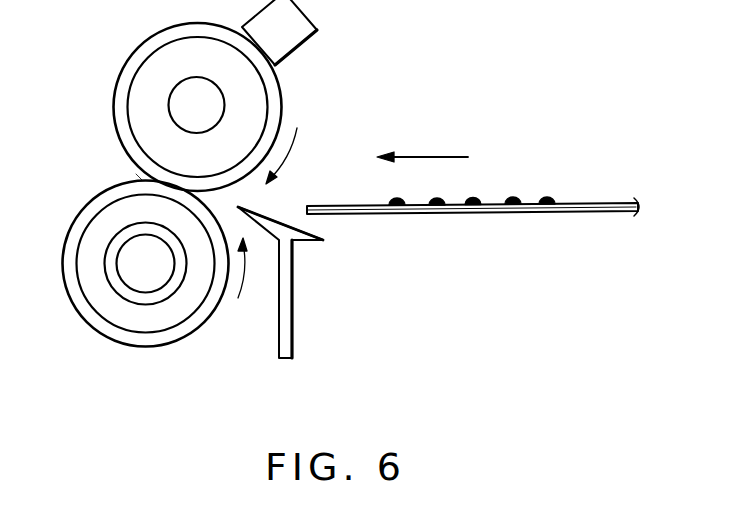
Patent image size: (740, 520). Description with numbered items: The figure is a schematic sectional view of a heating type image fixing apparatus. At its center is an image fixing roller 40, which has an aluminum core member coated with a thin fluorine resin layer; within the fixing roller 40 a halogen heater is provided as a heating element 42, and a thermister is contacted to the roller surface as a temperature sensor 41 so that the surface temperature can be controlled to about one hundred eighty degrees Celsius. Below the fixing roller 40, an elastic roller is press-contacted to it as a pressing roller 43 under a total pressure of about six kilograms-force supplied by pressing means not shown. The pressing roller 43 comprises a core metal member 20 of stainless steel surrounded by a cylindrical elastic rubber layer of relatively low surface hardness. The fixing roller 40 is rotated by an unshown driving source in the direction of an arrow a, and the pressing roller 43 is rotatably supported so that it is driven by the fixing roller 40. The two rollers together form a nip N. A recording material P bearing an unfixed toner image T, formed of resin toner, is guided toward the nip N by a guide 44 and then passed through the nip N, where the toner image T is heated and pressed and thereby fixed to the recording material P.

The image fixing roller 40 is at (119, 67).
The temperature sensor 41 is at (307, 10).
The heating element 42 is at (213, 105).
The pressing roller 43 is at (118, 345).
The guide 44 is at (292, 334).
The core metal member 20 is at (167, 292).
The nip N is at (138, 176).
The recording material P is at (600, 203).
The toner image T is at (400, 198).
The arrow indicating rotation direction a is at (290, 146).